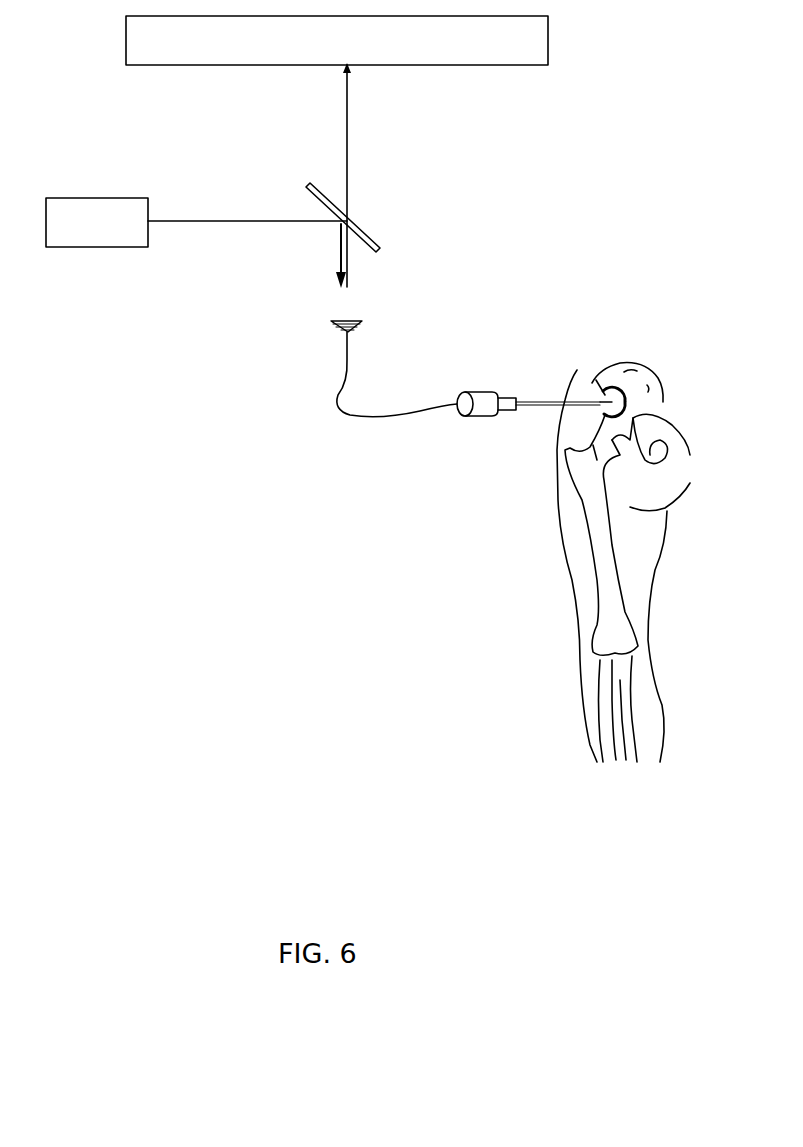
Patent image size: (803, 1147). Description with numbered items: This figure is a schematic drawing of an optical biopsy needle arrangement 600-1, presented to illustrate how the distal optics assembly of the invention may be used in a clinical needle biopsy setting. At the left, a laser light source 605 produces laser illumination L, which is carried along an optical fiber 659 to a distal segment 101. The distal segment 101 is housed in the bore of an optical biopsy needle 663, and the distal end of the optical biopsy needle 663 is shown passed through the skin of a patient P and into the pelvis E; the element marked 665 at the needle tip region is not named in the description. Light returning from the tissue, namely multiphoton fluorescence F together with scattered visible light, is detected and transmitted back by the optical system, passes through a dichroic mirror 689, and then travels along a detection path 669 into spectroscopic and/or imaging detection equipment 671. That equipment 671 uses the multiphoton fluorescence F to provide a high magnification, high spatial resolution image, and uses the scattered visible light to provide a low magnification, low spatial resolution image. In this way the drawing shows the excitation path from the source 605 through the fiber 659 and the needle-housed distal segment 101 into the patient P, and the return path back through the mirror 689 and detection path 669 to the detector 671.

The optical biopsy needle arrangement 600-1 is at (116, 505).
The spectroscopic and/or imaging detection equipment 671 is at (538, 43).
The laser light source 605 is at (62, 235).
The optical fiber 659 is at (181, 222).
The laser illumination L is at (240, 222).
The detection path 669 is at (348, 153).
The multiphoton fluorescence F is at (348, 104).
The dichroic mirror 689 is at (372, 240).
The optical biopsy needle 663 is at (480, 418).
The distal segment 101 is at (598, 386).
The probe tip 665 is at (620, 402).
The pelvis E is at (638, 362).
The patient P is at (563, 515).